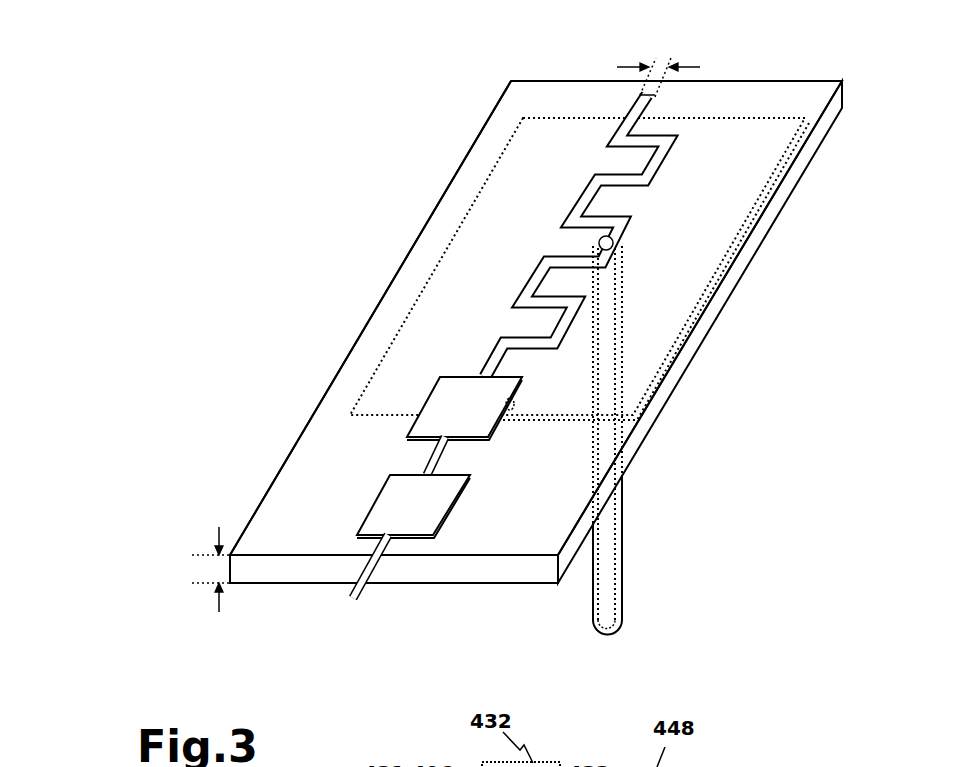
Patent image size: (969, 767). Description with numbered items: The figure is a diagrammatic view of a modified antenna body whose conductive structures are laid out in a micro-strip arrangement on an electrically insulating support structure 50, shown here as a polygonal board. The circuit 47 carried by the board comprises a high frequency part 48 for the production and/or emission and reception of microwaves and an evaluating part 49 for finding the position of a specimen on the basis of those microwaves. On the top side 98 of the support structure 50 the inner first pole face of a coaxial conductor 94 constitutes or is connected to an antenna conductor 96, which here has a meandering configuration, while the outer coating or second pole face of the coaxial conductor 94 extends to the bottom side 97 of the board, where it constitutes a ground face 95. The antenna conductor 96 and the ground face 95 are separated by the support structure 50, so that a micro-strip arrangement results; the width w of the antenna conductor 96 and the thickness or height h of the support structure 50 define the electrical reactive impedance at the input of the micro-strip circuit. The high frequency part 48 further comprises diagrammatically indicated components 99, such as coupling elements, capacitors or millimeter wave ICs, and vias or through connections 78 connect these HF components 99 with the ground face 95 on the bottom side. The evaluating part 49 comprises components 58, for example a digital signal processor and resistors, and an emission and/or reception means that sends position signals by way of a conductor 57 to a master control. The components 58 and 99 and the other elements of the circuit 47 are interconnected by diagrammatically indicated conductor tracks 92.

The circuit 47 is at (433, 176).
The high frequency part 48 is at (512, 160).
The evaluating part 49 is at (272, 483).
The support structure 50 is at (722, 301).
The conductor 57 is at (358, 592).
The components 58 is at (380, 514).
The vias or through connections 78 is at (512, 405).
The conductor tracks 92 is at (460, 456).
The coaxial conductor 94 is at (612, 580).
The ground face 95 is at (437, 268).
The antenna conductor 96 is at (640, 103).
The bottom side 97 is at (448, 585).
The top side 98 is at (340, 393).
The components 99 is at (418, 432).
The thickness or height h is at (205, 567).
The width w is at (666, 63).